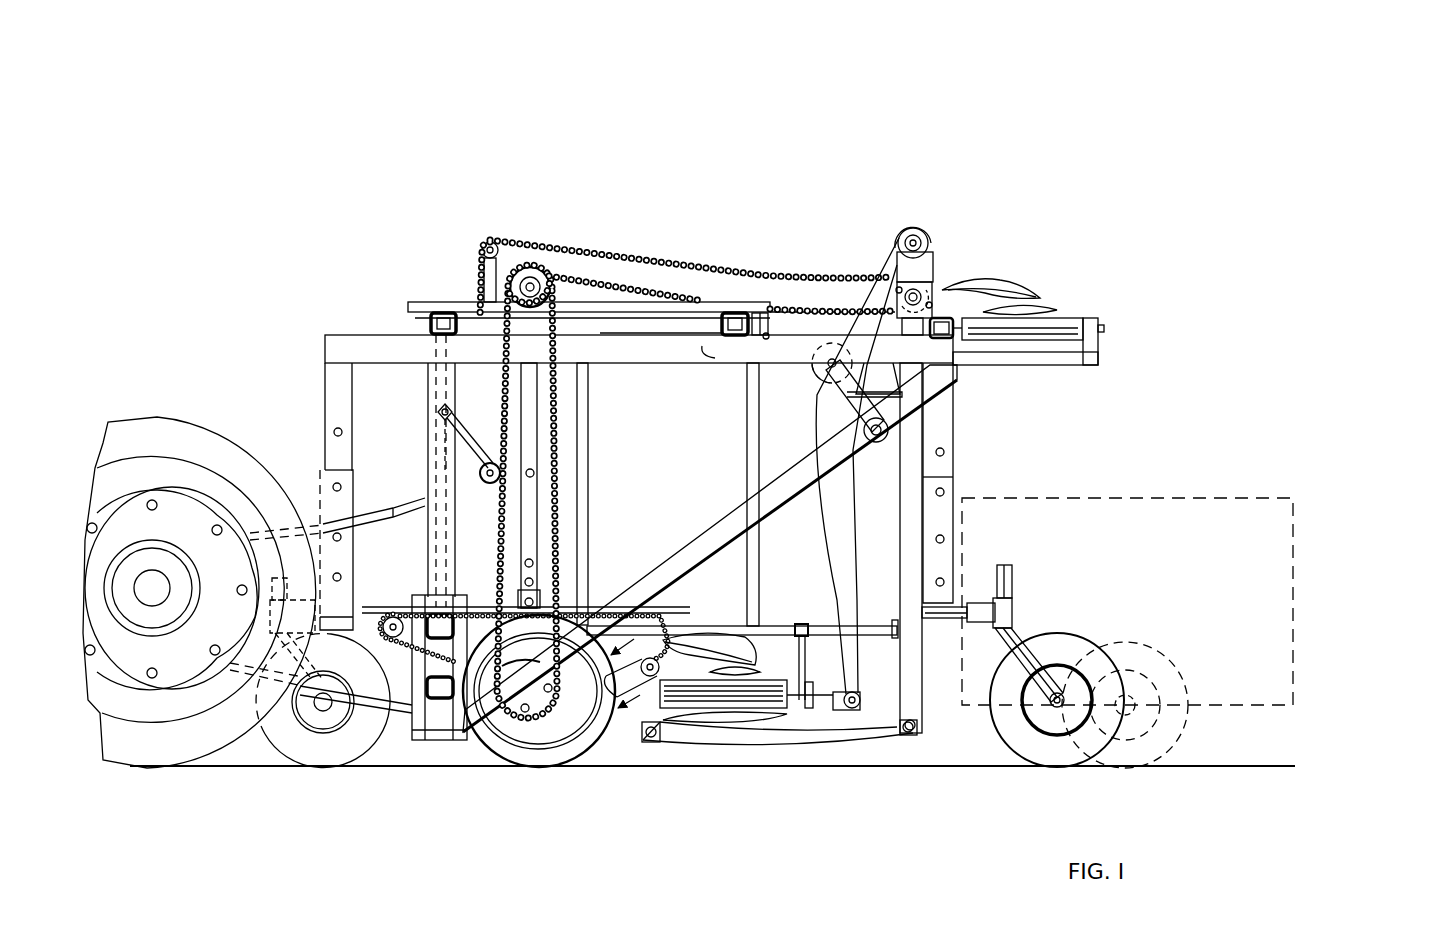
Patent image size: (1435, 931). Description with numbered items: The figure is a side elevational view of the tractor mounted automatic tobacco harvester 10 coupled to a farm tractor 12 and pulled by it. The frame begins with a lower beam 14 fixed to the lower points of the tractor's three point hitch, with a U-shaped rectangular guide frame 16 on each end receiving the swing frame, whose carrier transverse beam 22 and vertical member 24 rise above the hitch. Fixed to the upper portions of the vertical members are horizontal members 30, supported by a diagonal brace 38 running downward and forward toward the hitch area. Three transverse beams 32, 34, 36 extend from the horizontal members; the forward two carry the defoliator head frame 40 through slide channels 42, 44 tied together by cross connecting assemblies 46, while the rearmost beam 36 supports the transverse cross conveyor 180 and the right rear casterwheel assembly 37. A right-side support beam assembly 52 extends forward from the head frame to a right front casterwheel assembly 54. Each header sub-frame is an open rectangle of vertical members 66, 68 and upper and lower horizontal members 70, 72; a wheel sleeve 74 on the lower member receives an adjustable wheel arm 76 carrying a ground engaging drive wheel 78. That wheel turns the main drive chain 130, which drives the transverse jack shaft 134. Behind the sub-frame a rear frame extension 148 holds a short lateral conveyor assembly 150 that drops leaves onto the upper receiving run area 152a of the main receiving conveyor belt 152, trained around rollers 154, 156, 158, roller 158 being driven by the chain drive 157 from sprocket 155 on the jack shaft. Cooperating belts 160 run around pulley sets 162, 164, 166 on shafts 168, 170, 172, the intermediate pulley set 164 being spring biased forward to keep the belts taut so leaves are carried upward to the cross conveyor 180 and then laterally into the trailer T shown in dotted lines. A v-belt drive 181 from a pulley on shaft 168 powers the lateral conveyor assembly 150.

The tractor mounted tobacco harvester 10 is at (639, 471).
The farm tractor 12 is at (216, 405).
The lower beam 14 is at (411, 711).
The U-shaped rectangular guide frame 16 is at (425, 735).
The carrier transverse beam 22 is at (400, 716).
The vertical member 24 is at (428, 383).
The horizontal member 30 is at (685, 355).
The transverse beam 32 is at (428, 312).
The transverse beam 34 is at (795, 312).
The transverse beam 36 is at (1005, 280).
The right rear casterwheel assembly 37 is at (988, 634).
The diagonal brace 38 is at (682, 557).
The defoliator head frame 40 is at (704, 346).
The transverse slide channel 42 is at (440, 312).
The transverse slide channel 44 is at (733, 313).
The cross connecting assembly 46 is at (668, 323).
The right-side support beam assembly 52 is at (340, 350).
The right front casterwheel assembly 54 is at (376, 598).
The vertical member 66 is at (755, 460).
The vertical member 68 is at (453, 405).
The upper horizontal member 70 is at (632, 307).
The lower horizontal member 72 is at (702, 632).
The wheel sleeve 74 is at (540, 598).
The adjustable wheel arm 76 is at (540, 460).
The ground engaging drive wheel 78 is at (570, 742).
The main drive chain 130 is at (560, 418).
The transverse jack shaft 134 is at (532, 263).
The rear frame extension 148 is at (777, 628).
The lateral conveyor assembly 150 is at (790, 714).
The main receiving conveyor belt 152 is at (767, 773).
The upper receiving run area 152a is at (679, 720).
The roller 154 is at (685, 717).
The sprocket 155 is at (562, 272).
The roller 156 is at (908, 733).
The chain drive 157 is at (757, 313).
The roller 158 is at (950, 263).
The belt 160 is at (790, 422).
The pulley set 162 is at (860, 710).
The intermediate pulley set 164 is at (823, 375).
The pulley set 166 is at (922, 233).
The shaft 168 is at (854, 696).
The shaft 170 is at (835, 342).
The shaft 172 is at (940, 237).
The transverse cross conveyor 180 is at (1107, 312).
The v-belt drive 181 is at (825, 580).
The trailer T is at (1262, 618).